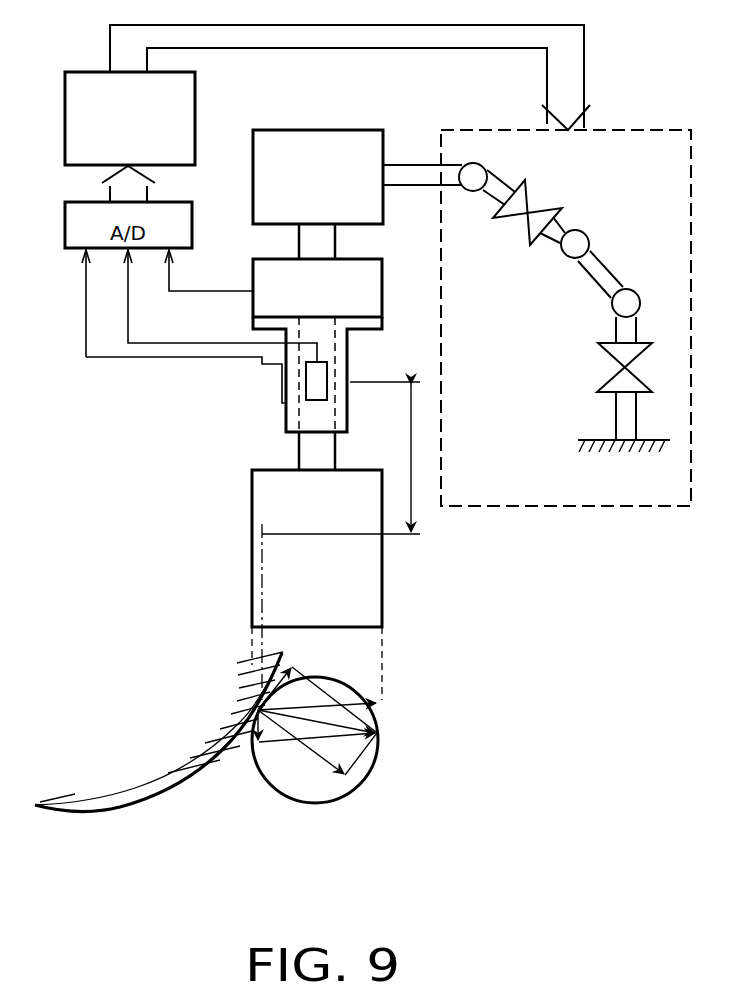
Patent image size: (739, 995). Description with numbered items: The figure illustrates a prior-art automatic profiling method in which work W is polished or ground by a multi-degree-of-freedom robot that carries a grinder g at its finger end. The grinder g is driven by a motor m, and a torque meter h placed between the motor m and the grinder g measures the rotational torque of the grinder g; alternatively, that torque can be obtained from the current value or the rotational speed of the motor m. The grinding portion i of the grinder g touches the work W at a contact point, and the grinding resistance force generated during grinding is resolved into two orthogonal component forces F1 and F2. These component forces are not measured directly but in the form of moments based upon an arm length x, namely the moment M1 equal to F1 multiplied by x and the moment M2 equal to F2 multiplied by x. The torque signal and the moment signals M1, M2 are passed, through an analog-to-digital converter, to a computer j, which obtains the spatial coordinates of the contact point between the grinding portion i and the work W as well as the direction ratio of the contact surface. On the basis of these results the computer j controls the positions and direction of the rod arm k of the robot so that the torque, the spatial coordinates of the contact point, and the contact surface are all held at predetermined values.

The computer j is at (130, 118).
The motor m is at (357, 177).
The torque meter h is at (317, 347).
The grinder g is at (386, 588).
The grinding portion i is at (384, 620).
The rod arm k is at (555, 507).
The work W is at (122, 758).
The component force F1 is at (350, 696).
The component force F2 is at (256, 736).
The moment M1 is at (170, 326).
The moment M2 is at (205, 306).
The arm length x is at (345, 458).